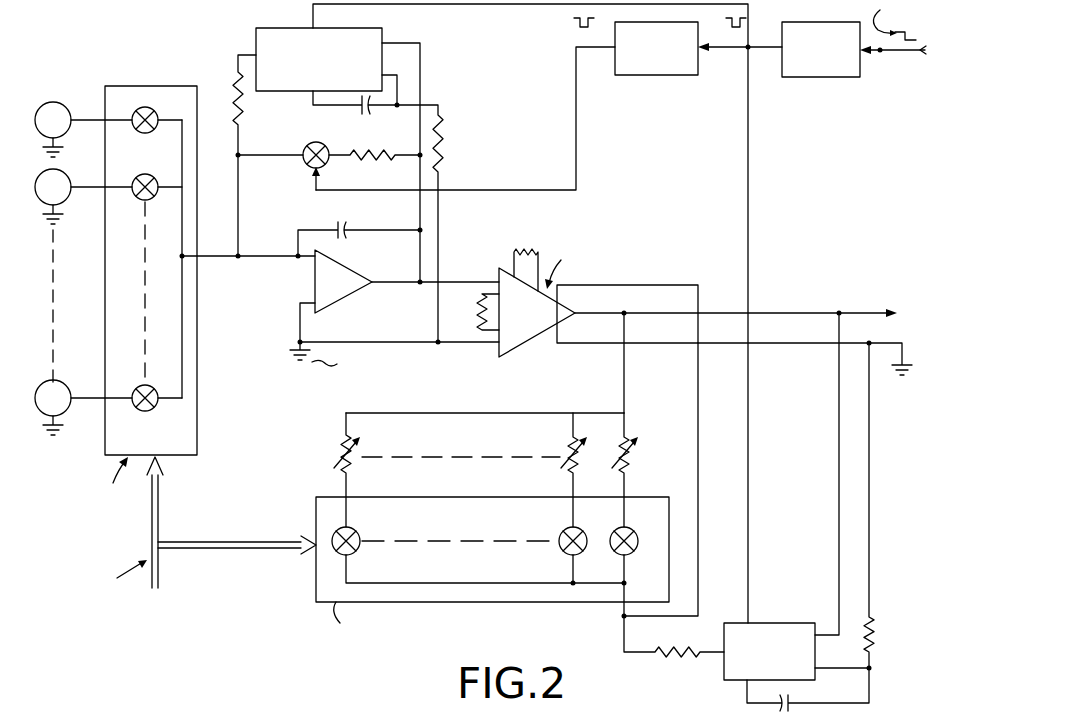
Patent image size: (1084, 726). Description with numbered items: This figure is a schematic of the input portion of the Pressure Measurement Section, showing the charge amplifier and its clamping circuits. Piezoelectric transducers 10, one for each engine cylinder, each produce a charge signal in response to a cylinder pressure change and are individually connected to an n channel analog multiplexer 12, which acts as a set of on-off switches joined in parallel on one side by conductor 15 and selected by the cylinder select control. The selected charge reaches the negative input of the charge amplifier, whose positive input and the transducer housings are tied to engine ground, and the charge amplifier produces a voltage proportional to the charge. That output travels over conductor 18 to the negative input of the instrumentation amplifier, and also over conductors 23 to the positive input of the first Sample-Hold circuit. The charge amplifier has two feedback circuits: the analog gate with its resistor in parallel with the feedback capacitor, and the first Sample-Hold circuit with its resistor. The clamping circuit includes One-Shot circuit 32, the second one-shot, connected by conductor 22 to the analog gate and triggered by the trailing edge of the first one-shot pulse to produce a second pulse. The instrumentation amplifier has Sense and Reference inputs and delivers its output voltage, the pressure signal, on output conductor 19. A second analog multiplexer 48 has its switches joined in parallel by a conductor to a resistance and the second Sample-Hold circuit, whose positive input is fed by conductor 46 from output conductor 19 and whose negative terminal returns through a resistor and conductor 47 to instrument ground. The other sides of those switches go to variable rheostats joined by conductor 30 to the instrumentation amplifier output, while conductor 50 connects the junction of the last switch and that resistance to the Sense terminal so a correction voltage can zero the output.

The piezoelectric transducers 10 is at (40, 110).
The analog multiplexer 12 is at (197, 397).
The conductor 15 is at (182, 320).
The conductor 18 is at (447, 283).
The output conductor 19 is at (800, 313).
The conductor 22 is at (576, 128).
The conductors 23 is at (420, 62).
The conductor 30 is at (471, 407).
The One-Shot circuit 32 is at (648, 75).
The conductor 46 is at (839, 428).
The conductor 47 is at (869, 437).
The second analog multiplexer 48 is at (428, 583).
The conductor 50 is at (698, 562).